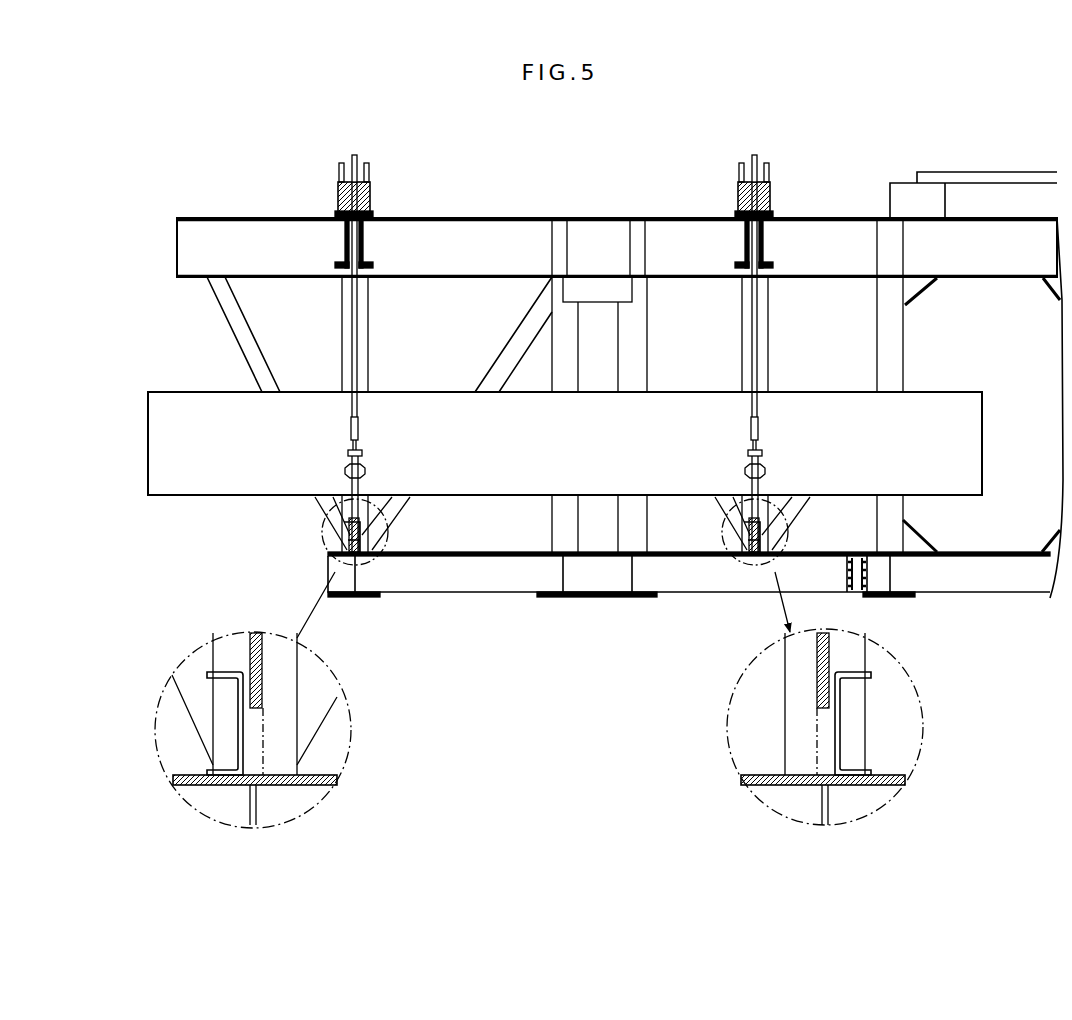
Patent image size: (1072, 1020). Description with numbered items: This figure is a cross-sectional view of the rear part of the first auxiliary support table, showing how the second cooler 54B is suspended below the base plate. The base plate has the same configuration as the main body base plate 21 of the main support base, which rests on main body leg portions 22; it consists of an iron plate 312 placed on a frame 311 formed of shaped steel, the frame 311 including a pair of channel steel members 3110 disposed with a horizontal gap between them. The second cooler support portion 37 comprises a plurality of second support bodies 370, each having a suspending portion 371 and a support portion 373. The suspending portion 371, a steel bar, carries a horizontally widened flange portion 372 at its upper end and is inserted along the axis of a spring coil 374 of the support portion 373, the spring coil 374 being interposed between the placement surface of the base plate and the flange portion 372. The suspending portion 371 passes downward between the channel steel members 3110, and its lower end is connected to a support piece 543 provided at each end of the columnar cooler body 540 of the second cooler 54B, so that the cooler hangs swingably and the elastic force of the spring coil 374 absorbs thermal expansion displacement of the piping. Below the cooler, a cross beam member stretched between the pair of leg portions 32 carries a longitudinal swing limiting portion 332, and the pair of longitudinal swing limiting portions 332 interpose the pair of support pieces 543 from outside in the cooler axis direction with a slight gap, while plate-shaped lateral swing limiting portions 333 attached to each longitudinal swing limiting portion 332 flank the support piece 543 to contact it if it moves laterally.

The main body base plate 21 is at (574, 226).
The frame 311 is at (176, 262).
The iron plate 312 is at (212, 218).
The main body leg portions 22 is at (548, 365).
The leg portions 32 is at (370, 362).
The second cooler support portion 37 is at (586, 217).
The second support body 370 is at (627, 217).
The suspending portion 371 is at (360, 330).
The flange portion 372 is at (341, 182).
The support portion 373 is at (374, 191).
The spring coil 374 is at (336, 207).
The channel steel members 3110 is at (344, 238).
The cooler body 540 is at (440, 392).
The second cooler 54B is at (972, 378).
The longitudinal swing limiting portion 332 is at (337, 547).
The lateral swing limiting portion 333 is at (300, 743).
The support piece 543 is at (383, 518).